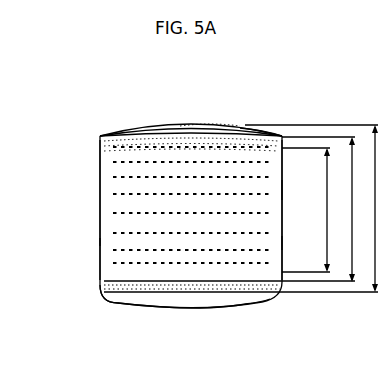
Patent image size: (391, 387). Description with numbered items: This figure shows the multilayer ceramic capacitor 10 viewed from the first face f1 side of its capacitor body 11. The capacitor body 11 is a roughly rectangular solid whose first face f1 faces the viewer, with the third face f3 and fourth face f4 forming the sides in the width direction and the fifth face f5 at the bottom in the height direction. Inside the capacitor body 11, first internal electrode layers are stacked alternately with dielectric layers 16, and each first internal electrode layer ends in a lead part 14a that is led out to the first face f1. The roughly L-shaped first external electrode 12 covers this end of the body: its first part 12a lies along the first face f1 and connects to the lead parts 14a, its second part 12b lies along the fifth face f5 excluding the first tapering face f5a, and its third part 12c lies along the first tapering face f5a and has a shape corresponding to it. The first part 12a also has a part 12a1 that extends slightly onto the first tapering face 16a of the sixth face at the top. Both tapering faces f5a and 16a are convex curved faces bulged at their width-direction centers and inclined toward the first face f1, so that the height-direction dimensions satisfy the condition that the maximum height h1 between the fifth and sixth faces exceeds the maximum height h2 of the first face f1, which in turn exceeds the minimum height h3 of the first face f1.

The multilayer ceramic capacitor 10 is at (112, 126).
The capacitor body 11 is at (155, 126).
The dielectric layers 16 is at (197, 123).
The lead part 14a is at (219, 120).
The first tapering face 16a is at (256, 128).
The part 12a1 is at (100, 139).
The first external electrode 12 is at (100, 184).
The first part 12a is at (130, 210).
The fourth face f4 is at (100, 242).
The second part 12b is at (160, 300).
The third part 12c is at (128, 304).
The fifth face f5 is at (240, 304).
The first tapering face f5a is at (258, 302).
The first face f1 is at (236, 191).
The third face f3 is at (283, 243).
The maximum height-direction dimension between fifth face and sixth face h1 is at (318, 208).
The maximum height-direction dimension of first face h2 is at (325, 209).
The minimum height-direction dimension of first face h3 is at (313, 210).